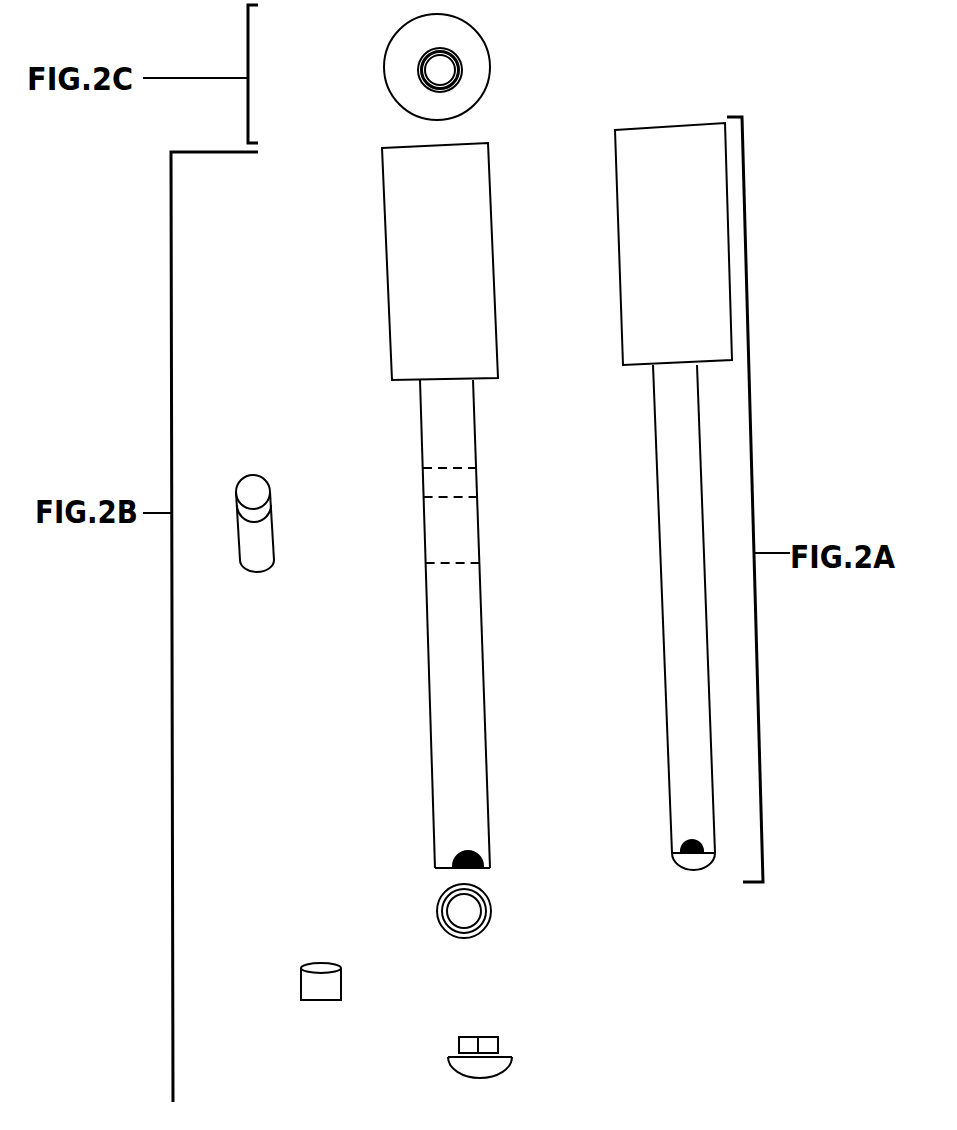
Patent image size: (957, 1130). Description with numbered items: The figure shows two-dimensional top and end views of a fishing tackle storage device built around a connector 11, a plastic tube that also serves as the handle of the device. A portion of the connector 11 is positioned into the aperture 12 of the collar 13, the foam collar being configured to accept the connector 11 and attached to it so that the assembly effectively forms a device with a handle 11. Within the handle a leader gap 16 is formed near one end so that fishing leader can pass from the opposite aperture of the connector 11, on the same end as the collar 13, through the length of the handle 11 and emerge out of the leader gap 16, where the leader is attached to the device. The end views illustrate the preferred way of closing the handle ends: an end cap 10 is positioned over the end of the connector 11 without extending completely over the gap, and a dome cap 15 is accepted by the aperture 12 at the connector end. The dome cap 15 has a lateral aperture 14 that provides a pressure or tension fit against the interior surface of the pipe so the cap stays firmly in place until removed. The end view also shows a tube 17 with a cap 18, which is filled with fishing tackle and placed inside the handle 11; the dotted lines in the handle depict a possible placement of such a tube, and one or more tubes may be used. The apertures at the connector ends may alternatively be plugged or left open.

In FIG. 2B, the end cap 10 is at (325, 985).
In FIG. 2C, the connector 11 is at (368, 60).
In FIG. 2B, the connector 11 is at (458, 665).
In FIG. 2A, the connector 11 is at (680, 557).
In FIG. 2C, the aperture 12 is at (443, 78).
In FIG. 2B, the aperture 12 is at (465, 910).
In FIG. 2C, the collar 13 is at (433, 111).
In FIG. 2B, the collar 13 is at (435, 320).
In FIG. 2A, the collar 13 is at (680, 320).
In FIG. 2B, the lateral aperture 14 is at (480, 1050).
In FIG. 2B, the dome cap 15 is at (520, 1034).
In FIG. 2B, the leader gap 16 is at (465, 856).
In FIG. 2A, the leader gap 16 is at (688, 843).
In FIG. 2B, the tube 17 is at (256, 545).
In FIG. 2B, the cap 18 is at (250, 490).